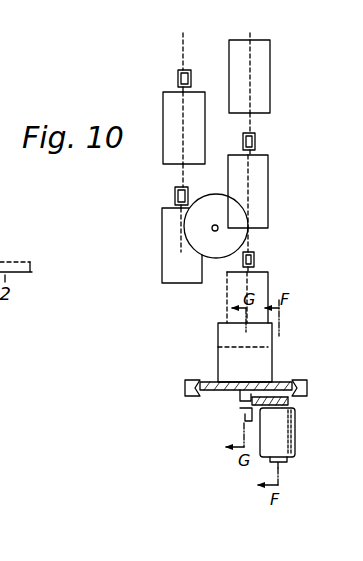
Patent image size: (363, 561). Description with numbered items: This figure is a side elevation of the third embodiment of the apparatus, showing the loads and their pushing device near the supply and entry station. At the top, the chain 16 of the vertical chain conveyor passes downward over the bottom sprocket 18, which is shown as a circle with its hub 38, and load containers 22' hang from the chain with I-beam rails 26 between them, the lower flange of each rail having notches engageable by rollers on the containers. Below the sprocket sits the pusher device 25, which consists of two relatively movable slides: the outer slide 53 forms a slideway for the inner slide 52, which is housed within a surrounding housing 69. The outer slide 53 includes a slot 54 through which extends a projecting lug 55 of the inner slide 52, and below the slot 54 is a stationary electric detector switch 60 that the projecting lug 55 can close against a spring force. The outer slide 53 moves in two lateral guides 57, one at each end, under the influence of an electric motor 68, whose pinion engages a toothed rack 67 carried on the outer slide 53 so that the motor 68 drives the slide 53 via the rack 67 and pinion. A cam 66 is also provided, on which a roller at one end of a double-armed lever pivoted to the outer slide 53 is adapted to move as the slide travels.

The chain 16 is at (250, 93).
The I-beam rail 26 is at (255, 142).
The container 22' is at (216, 207).
The bottom sprocket 18 is at (197, 235).
The axle 38 is at (215, 224).
The housing 69 is at (272, 352).
The inner slide 52 is at (222, 372).
The slot 54 is at (237, 384).
The lateral guide 57 is at (186, 387).
The projecting lug 55 is at (238, 400).
The outer slide 53 is at (289, 402).
The cam 66 is at (240, 412).
The electric detector switch 60 is at (245, 410).
The toothed rack 67 is at (295, 418).
The electric motor 68 is at (272, 440).
The pusher device 25 is at (173, 398).